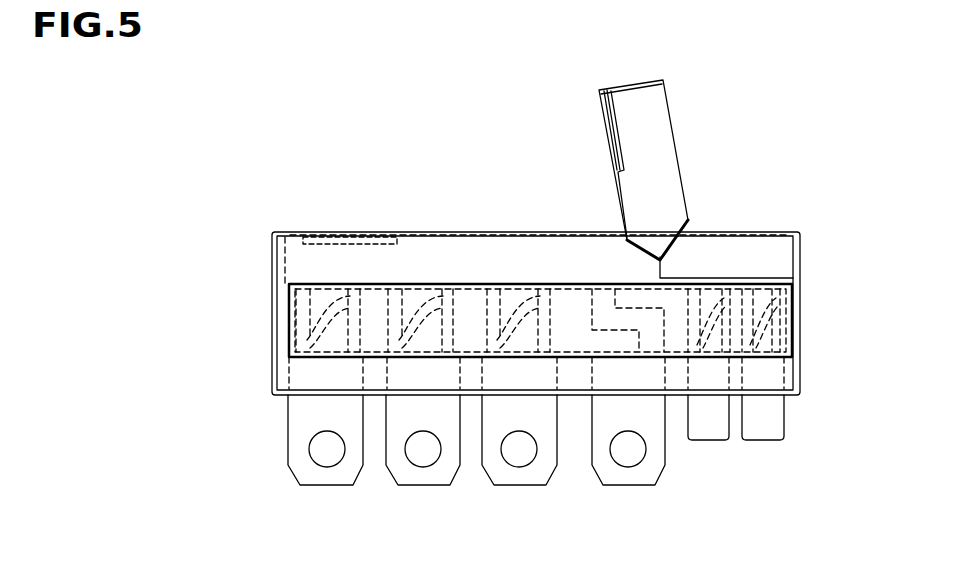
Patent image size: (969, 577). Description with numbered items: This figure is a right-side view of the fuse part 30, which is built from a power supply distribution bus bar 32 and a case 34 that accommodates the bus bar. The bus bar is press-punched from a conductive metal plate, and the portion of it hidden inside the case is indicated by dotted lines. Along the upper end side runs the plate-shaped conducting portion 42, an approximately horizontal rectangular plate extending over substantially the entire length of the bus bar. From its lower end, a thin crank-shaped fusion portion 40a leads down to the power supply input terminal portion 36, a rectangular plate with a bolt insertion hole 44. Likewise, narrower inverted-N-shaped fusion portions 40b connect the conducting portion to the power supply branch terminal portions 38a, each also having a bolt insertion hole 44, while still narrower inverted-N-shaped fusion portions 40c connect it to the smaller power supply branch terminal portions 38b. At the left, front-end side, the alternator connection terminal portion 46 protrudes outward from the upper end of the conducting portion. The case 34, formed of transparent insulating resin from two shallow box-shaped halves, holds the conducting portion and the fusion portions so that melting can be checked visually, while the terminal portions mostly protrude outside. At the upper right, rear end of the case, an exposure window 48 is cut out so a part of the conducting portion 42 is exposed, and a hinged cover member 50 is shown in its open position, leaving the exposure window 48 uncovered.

The fuse part 30 is at (512, 86).
The power supply distribution bus bar 32 is at (457, 218).
The case 34 is at (563, 258).
The power supply input terminal portion 36 is at (615, 477).
The power supply branch terminal portions 38a is at (312, 477).
The power supply branch terminal portions 38b is at (708, 428).
The fusion portion 40a is at (607, 320).
The fusion portion 40b is at (307, 323).
The fusion portion 40c is at (773, 323).
The plate-shaped conducting portion 42 is at (322, 268).
The bolt insertion hole 44 is at (342, 460).
The alternator connection terminal portion 46 is at (348, 240).
The exposure window 48 is at (762, 273).
The cover member 50 is at (650, 150).